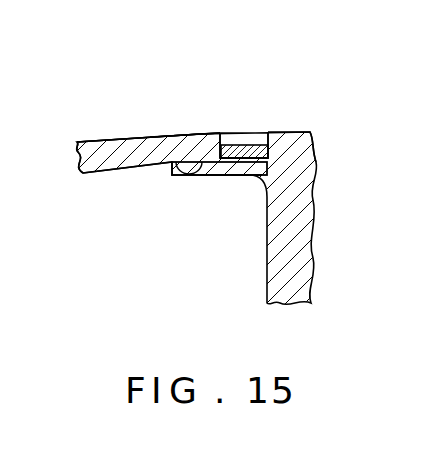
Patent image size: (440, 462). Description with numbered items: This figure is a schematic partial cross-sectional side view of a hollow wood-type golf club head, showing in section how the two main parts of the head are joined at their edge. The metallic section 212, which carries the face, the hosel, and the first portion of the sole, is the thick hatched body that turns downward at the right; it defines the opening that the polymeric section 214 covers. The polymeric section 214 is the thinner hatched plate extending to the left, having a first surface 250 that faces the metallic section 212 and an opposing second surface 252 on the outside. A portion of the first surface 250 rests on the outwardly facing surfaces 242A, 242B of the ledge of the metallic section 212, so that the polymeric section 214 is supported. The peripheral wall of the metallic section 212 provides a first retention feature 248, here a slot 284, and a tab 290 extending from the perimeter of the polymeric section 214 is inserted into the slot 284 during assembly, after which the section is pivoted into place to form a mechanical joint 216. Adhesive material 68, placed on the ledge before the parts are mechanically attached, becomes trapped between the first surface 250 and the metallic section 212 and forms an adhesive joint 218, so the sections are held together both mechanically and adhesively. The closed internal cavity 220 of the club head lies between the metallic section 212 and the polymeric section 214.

The adhesive material 68 is at (166, 192).
The metallic section 212 is at (287, 230).
The polymeric section 214 is at (167, 138).
The mechanical joint 216 is at (177, 134).
The adhesive joint 218 is at (228, 174).
The closed internal cavity 220 is at (202, 160).
The outwardly facing surface of the ledge 242A is at (302, 132).
The outwardly facing surface of the ledge 242B is at (103, 140).
The first retention feature 248 is at (246, 145).
The first surface 250 is at (247, 174).
The second surface 252 is at (197, 133).
The slot 284 is at (240, 145).
The tab 290 is at (256, 145).